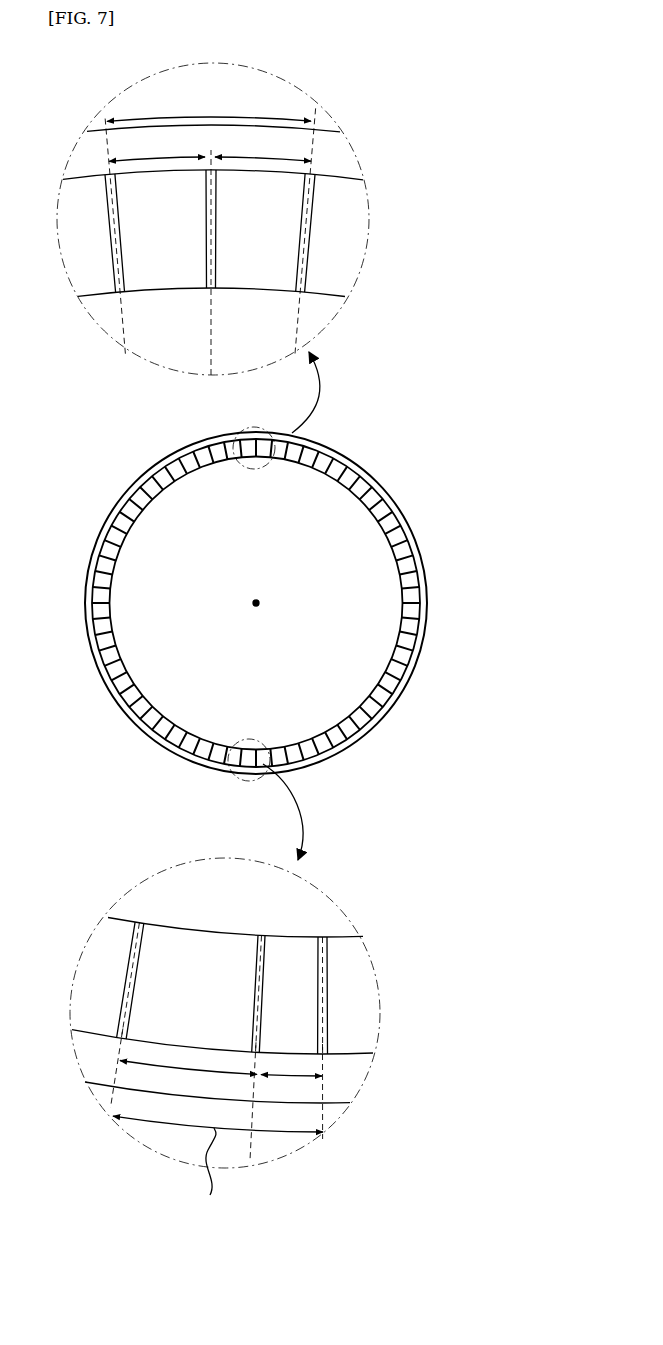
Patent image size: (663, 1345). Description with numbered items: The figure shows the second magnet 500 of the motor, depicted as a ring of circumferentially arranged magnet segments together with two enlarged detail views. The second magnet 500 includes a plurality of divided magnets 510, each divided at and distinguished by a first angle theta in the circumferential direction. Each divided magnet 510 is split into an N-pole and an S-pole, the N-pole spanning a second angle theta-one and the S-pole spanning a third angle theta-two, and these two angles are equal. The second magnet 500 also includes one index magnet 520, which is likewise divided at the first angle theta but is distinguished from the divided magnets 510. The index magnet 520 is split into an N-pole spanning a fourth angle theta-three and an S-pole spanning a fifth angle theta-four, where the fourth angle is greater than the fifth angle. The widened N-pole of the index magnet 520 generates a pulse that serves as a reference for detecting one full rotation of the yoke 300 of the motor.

The yoke 300 is at (428, 550).
The second magnet 500 is at (426, 602).
The divided magnet 510 is at (298, 297).
The index magnet 520 is at (144, 917).